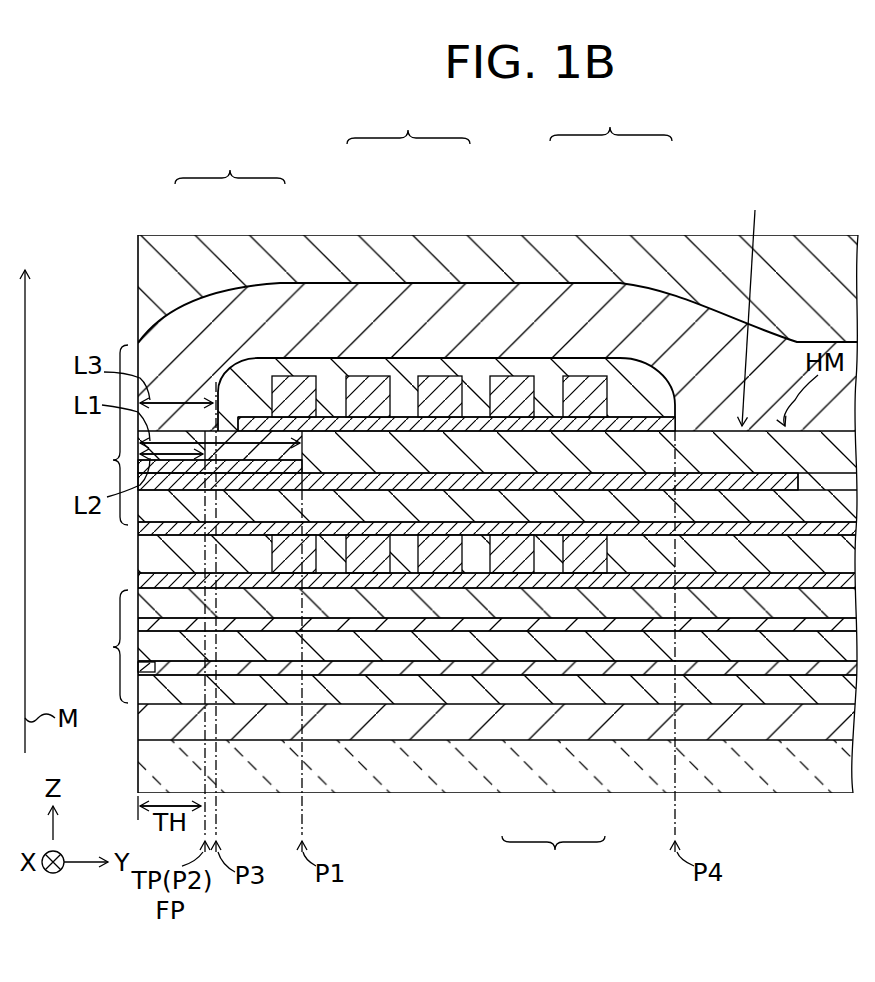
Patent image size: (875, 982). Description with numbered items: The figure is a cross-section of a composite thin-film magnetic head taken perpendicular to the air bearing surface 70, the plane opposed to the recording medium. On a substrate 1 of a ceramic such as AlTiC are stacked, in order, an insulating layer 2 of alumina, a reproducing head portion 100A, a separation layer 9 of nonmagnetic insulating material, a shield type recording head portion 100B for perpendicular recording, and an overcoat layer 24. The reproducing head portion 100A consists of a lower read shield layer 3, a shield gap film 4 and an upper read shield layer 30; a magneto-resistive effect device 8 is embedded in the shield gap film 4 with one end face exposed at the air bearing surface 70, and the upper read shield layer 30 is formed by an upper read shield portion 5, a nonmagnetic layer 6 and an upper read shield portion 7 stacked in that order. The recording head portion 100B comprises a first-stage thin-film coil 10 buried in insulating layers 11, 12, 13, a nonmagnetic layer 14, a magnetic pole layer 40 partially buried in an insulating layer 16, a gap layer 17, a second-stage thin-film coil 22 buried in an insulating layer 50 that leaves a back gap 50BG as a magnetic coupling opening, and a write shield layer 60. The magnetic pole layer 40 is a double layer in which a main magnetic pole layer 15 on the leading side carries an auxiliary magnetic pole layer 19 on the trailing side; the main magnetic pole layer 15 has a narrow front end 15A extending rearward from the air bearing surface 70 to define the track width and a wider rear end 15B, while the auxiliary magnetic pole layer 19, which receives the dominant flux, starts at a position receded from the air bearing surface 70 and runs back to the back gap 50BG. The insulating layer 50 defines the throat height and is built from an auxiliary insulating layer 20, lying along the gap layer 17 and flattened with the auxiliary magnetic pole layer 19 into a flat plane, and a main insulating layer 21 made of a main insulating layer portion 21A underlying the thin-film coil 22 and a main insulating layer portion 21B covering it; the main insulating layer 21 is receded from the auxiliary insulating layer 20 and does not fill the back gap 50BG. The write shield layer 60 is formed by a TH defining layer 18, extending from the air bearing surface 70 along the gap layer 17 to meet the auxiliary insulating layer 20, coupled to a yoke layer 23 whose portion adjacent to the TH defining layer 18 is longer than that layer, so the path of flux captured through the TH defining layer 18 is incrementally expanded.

The substrate 1 is at (768, 767).
The insulating layer 2 is at (747, 732).
The lower read shield layer 3 is at (708, 688).
The shield gap film 4 is at (640, 670).
The upper read shield portion 5 is at (595, 653).
The nonmagnetic layer 6 is at (560, 622).
The upper read shield portion 7 is at (523, 603).
The magneto-resistive effect device 8 is at (148, 672).
The separation layer 9 is at (480, 583).
The first-stage thin-film coil 10 is at (440, 567).
The insulating layer 11 is at (407, 563).
The insulating layer 12 is at (800, 563).
The insulating layer 13 is at (363, 530).
The nonmagnetic layer 14 is at (290, 455).
The main magnetic pole layer 15 is at (361, 306).
The front end 15A is at (322, 440).
The rear end 15B is at (383, 465).
The insulating layer 16 is at (835, 485).
The gap layer 17 is at (237, 470).
The TH defining layer 18 is at (174, 467).
The auxiliary magnetic pole layer 19 is at (445, 443).
The auxiliary insulating layer 20 is at (300, 499).
The main insulating layer 21 is at (461, 284).
The main insulating layer portion 21A is at (588, 428).
The main insulating layer portion 21B is at (633, 373).
The second-stage thin-film coil 22 is at (505, 387).
The yoke layer 23 is at (256, 293).
The overcoat layer 24 is at (826, 240).
The upper read shield layer 30 is at (553, 860).
The magnetic pole layer 40 is at (408, 120).
The insulating layer 50 is at (611, 117).
The back gap 50BG is at (755, 304).
The write shield layer 60 is at (230, 161).
The air bearing surface 70 is at (136, 283).
The reproducing head portion 100A is at (88, 646).
The recording head portion 100B is at (87, 435).